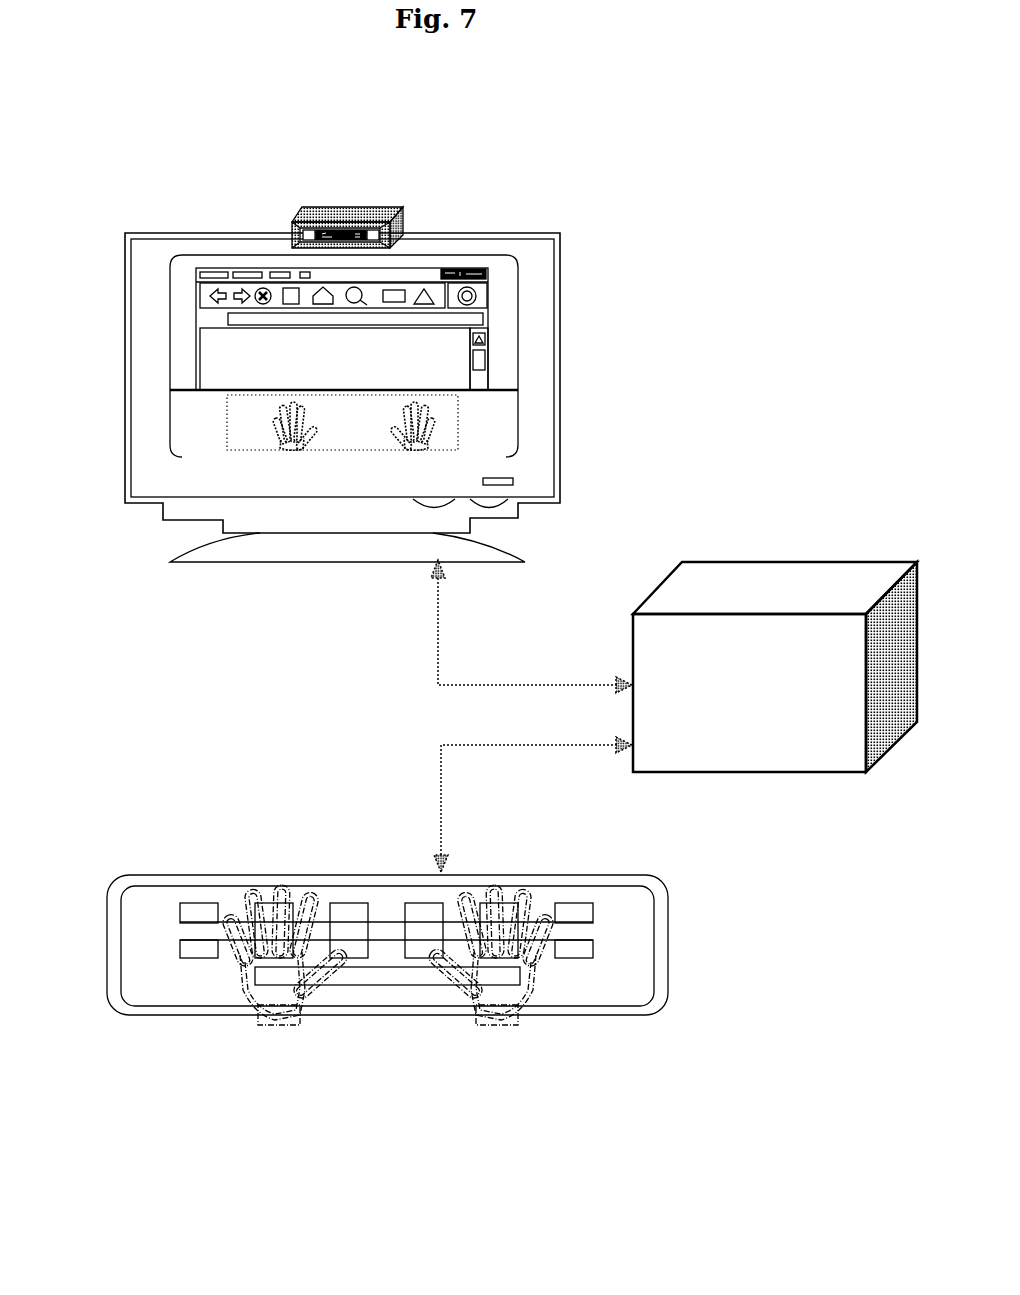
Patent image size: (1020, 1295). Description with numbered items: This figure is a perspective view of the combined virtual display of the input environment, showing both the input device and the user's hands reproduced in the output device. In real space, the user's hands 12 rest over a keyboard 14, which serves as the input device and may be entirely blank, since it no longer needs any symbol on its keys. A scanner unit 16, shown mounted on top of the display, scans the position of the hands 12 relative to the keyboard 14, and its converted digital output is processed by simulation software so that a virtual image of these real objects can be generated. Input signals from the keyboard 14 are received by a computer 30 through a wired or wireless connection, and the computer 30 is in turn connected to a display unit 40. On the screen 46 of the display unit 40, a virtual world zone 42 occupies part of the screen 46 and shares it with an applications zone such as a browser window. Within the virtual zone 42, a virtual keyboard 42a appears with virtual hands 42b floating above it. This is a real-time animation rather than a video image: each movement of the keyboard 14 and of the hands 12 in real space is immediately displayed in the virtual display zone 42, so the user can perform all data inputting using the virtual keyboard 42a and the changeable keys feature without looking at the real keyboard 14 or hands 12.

The hands 12 is at (283, 1025).
The keyboard 14 is at (122, 965).
The scanner unit 16 is at (398, 218).
The computer 30 is at (775, 667).
The display unit 40 is at (557, 307).
The virtual world zone 42 is at (185, 407).
The virtual keyboard 42a is at (240, 439).
The virtual hands 42b is at (285, 432).
The screen 46 is at (174, 308).